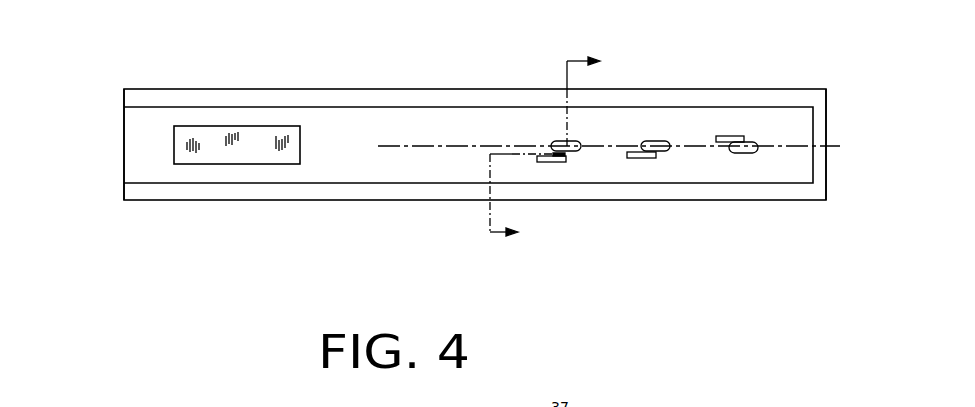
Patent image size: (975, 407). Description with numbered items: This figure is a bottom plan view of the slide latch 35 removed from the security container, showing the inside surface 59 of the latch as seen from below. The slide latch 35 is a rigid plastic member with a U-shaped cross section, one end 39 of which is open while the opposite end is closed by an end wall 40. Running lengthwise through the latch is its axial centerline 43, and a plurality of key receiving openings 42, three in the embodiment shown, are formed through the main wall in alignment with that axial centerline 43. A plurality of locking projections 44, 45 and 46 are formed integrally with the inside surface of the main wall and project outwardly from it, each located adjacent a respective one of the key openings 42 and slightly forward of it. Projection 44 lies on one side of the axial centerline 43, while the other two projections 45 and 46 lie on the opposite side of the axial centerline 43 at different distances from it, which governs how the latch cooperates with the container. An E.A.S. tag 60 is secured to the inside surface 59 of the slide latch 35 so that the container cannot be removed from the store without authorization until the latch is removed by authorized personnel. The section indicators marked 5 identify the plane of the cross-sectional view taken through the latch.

The slide latch 35 is at (321, 90).
The open end of slide latch 39 is at (124, 128).
The end wall 40 is at (820, 171).
The key receiving openings 42 is at (745, 153).
The axial centerline 43 is at (832, 147).
The locking projection 44 is at (727, 136).
The locking projection 45 is at (645, 158).
The locking projection 46 is at (555, 162).
The inside surface of slide latch 59 is at (381, 166).
The E.A.S. tag 60 is at (252, 145).
The section line 5- 5 is at (554, 147).